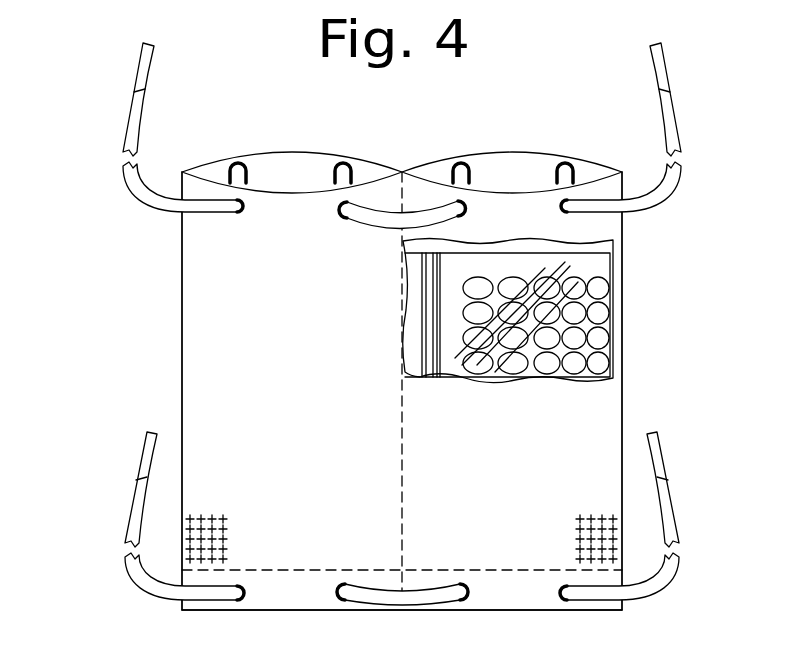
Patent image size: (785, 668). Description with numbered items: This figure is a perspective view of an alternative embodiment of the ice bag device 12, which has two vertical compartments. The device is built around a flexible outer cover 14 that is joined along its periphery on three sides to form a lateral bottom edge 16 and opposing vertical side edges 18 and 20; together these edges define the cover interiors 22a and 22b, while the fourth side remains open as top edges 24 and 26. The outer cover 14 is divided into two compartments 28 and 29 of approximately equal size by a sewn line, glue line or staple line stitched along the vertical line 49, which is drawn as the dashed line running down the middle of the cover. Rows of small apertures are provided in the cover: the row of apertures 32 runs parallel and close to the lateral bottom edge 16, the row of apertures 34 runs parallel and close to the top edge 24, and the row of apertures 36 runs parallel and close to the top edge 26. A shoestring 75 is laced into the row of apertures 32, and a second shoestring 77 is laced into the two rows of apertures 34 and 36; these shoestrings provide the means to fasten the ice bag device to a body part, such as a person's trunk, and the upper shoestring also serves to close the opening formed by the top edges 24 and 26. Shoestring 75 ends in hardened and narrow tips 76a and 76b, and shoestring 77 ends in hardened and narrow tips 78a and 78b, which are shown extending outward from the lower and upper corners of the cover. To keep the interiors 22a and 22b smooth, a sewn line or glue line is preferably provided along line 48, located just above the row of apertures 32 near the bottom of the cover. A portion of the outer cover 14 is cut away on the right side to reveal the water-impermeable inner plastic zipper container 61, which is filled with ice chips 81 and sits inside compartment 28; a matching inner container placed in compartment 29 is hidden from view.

The ice bag device 12 is at (172, 242).
The flexible outer cover 14 is at (230, 283).
The lateral bottom edge 16 is at (230, 610).
The vertical side edge 18 is at (625, 228).
The vertical side edge 20 is at (182, 311).
The cover interior 22a is at (435, 172).
The cover interior 22b is at (363, 172).
The open top edge 24 is at (218, 183).
The open top edge 26 is at (233, 160).
The compartment 28 is at (590, 412).
The compartment 29 is at (226, 378).
The row of apertures 32 is at (337, 586).
The row of apertures 34 is at (338, 203).
The row of apertures 36 is at (340, 165).
The line 48 is at (322, 570).
The vertical line 49 is at (402, 440).
The inner plastic zipper container 61 is at (592, 270).
The shoestring 75 is at (663, 587).
The hardened narrow tip 76a is at (665, 452).
The hardened narrow tip 76b is at (143, 450).
The shoestring 77 is at (672, 185).
The hardened narrow tip 78a is at (660, 60).
The hardened narrow tip 78b is at (138, 63).
The ice chips 81 is at (575, 316).